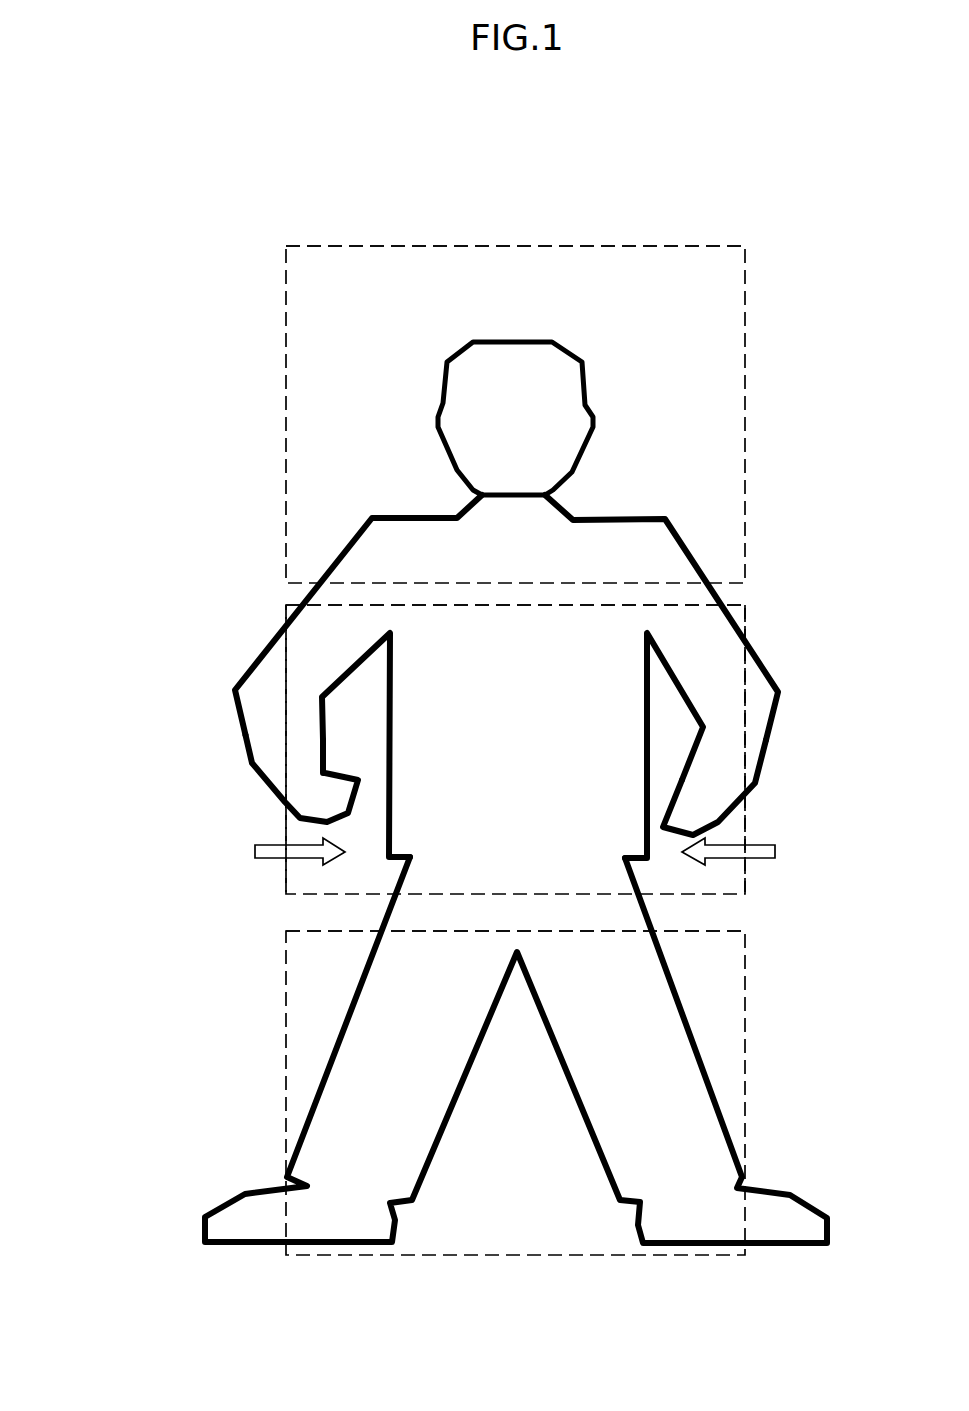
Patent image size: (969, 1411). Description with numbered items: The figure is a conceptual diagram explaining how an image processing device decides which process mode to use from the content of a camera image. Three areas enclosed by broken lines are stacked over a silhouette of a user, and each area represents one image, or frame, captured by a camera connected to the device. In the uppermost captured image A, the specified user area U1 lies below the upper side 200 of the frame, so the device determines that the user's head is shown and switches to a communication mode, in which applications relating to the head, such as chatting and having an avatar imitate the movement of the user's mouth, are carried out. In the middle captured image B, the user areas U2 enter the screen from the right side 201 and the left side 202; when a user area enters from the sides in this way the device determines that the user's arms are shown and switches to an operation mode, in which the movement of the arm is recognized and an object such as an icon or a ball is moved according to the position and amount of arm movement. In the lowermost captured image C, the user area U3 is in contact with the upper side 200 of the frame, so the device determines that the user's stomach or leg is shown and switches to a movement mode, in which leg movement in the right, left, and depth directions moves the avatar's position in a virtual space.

The upper side 200 is at (500, 247).
The right side 201 is at (747, 707).
The left side 202 is at (285, 673).
The captured image A is at (275, 400).
The captured image B is at (275, 723).
The captured image C is at (275, 1037).
The user area U1 is at (523, 336).
The user area U2 is at (308, 792).
The user area U3 is at (658, 1080).